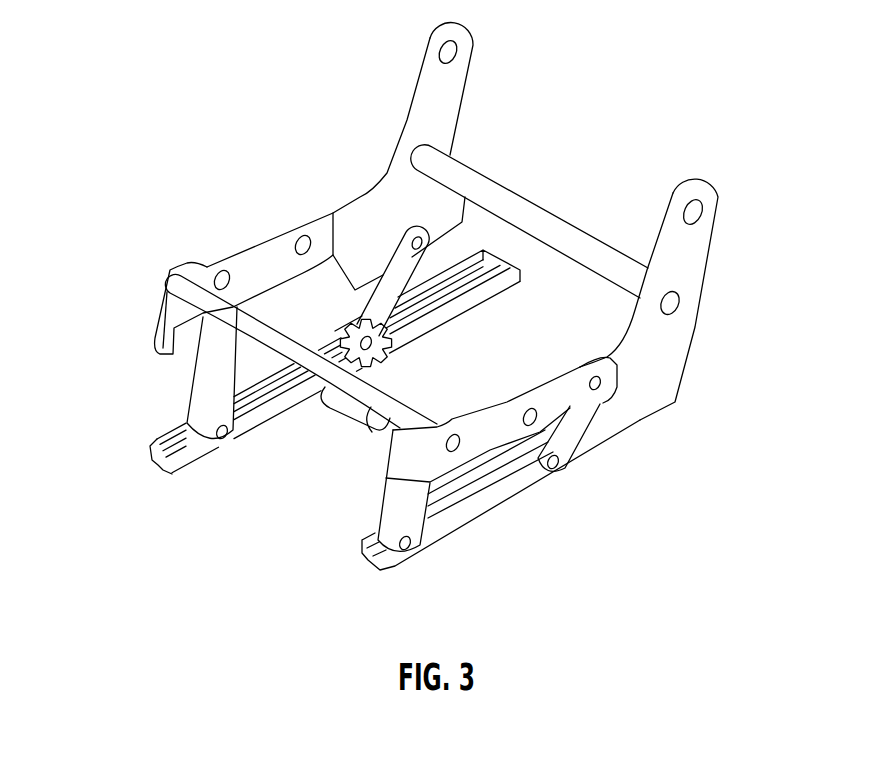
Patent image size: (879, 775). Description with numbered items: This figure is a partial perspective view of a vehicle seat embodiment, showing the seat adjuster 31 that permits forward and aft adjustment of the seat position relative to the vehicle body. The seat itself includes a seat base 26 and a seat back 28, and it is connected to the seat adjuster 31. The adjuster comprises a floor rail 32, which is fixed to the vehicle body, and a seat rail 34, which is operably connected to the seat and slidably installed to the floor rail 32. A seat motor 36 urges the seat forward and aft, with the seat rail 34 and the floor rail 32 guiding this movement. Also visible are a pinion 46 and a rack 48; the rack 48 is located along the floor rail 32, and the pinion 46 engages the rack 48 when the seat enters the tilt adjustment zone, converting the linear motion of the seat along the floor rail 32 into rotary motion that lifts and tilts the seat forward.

The seat base 26 is at (265, 253).
The seat back 28 is at (702, 243).
The seat adjuster 31 is at (124, 402).
The floor rail 32 is at (487, 298).
The seat rail 34 is at (197, 453).
The seat motor 36 is at (344, 410).
The pinion 46 is at (387, 327).
The rack 48 is at (372, 367).